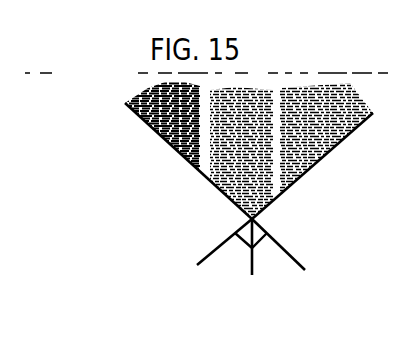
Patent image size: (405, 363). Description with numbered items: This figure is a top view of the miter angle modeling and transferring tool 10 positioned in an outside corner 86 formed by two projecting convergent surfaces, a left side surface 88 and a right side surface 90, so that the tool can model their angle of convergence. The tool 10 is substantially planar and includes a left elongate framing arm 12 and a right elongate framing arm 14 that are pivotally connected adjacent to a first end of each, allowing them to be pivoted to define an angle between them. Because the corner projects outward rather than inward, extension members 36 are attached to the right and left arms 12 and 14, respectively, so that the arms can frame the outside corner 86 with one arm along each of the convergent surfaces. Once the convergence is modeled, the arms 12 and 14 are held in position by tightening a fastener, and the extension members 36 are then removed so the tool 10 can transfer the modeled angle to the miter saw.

The miter angle modeling and transferring tool 10 is at (256, 265).
The left elongate framing arm 12 is at (290, 255).
The right elongate framing arm 14 is at (200, 264).
The extension members 36 is at (218, 197).
The outside corner 86 is at (177, 227).
The left side surface 88 is at (153, 133).
The right side surface 90 is at (328, 153).